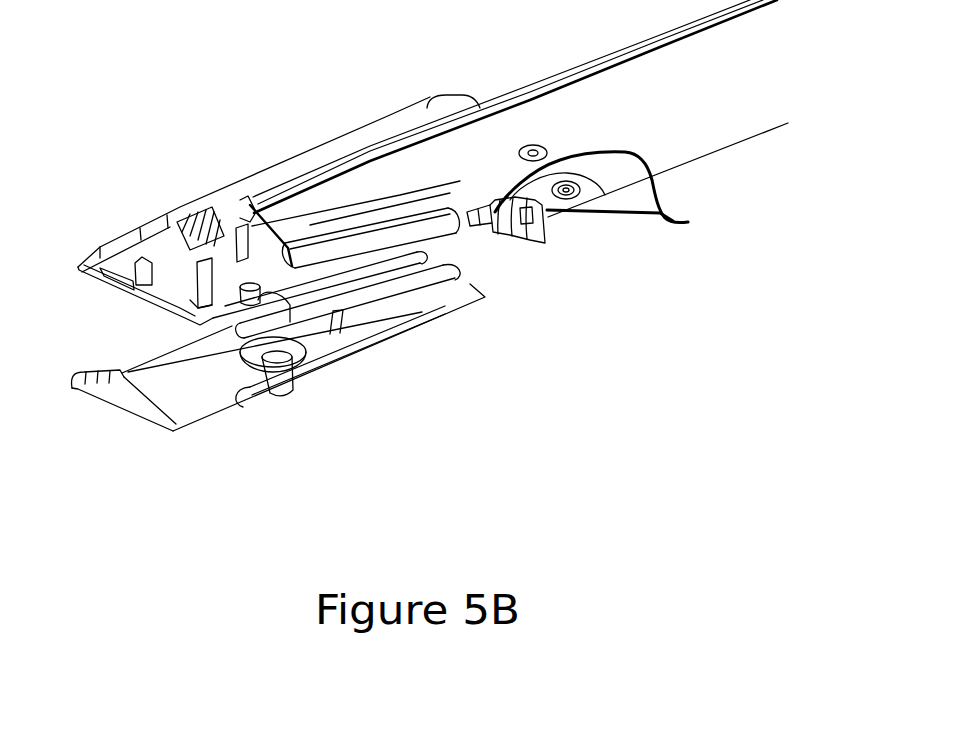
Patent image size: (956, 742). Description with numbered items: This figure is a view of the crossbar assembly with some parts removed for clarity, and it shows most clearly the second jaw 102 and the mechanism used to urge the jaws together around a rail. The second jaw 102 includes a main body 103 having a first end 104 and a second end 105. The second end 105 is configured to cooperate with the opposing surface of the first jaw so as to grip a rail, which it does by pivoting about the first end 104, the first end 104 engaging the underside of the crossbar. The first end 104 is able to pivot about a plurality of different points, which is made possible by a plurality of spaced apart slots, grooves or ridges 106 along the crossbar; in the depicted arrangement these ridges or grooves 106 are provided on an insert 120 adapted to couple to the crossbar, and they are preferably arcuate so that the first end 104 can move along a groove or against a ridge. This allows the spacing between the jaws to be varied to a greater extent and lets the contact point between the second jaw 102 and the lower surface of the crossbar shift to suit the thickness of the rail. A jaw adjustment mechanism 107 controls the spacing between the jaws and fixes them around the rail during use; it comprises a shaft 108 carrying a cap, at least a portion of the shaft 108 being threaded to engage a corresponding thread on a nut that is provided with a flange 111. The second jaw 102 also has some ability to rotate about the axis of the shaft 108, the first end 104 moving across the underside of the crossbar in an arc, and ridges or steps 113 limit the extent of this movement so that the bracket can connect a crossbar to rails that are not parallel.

The second jaw 102 is at (256, 430).
The main body 103 is at (432, 318).
The first end 104 is at (544, 244).
The second end 105 is at (170, 440).
The slots, grooves or ridges 106 is at (485, 210).
The jaw adjustment mechanism 107 is at (208, 323).
The shaft 108 is at (300, 387).
The flange 111 is at (302, 342).
The ridges or steps 113 is at (682, 222).
The insert 120 is at (469, 203).